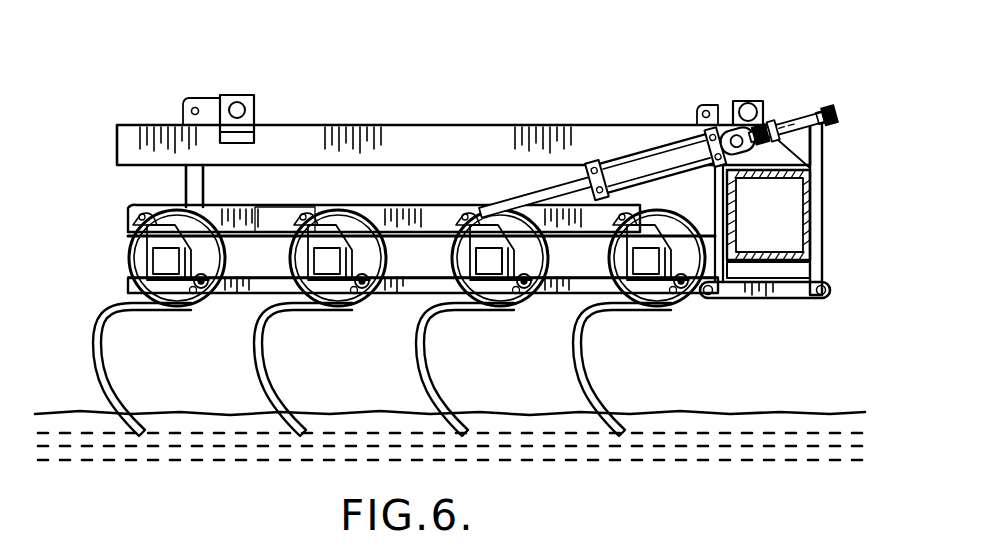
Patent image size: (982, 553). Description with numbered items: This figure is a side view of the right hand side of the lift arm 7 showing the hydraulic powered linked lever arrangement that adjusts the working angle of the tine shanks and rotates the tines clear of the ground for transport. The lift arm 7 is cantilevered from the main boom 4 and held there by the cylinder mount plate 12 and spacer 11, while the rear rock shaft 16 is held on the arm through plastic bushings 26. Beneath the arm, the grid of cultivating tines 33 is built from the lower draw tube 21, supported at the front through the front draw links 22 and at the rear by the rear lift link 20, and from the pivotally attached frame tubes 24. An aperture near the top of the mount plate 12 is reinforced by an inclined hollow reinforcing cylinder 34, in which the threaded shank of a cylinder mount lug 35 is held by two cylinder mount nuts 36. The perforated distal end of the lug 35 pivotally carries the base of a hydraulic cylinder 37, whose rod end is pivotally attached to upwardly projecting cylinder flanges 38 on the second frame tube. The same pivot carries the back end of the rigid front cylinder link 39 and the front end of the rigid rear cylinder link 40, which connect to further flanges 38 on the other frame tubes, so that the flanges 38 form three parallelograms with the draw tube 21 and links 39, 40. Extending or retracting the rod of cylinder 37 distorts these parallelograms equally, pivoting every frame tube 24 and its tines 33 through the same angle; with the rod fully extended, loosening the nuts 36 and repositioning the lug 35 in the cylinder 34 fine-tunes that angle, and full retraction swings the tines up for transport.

The main boom 4 is at (790, 299).
The lift arm 7 is at (148, 125).
The spacer 11 is at (770, 275).
The cylinder mount plate 12 is at (814, 215).
The rear rock shaft 16 is at (255, 110).
The rear lift link 20 is at (190, 187).
The lower draw tube 21 is at (240, 298).
The front draw link 22 is at (722, 300).
The frame tube 24 is at (470, 263).
The plastic bushing 26 is at (228, 97).
The cultivating tine 33 is at (268, 382).
The reinforcing cylinder 34 is at (795, 130).
The cylinder mount lug 35 is at (734, 125).
The cylinder mount nut 36 is at (773, 133).
The hydraulic cylinder 37 is at (628, 165).
The cylinder flange 38 is at (134, 232).
The front cylinder link 39 is at (600, 228).
The rear cylinder link 40 is at (270, 206).